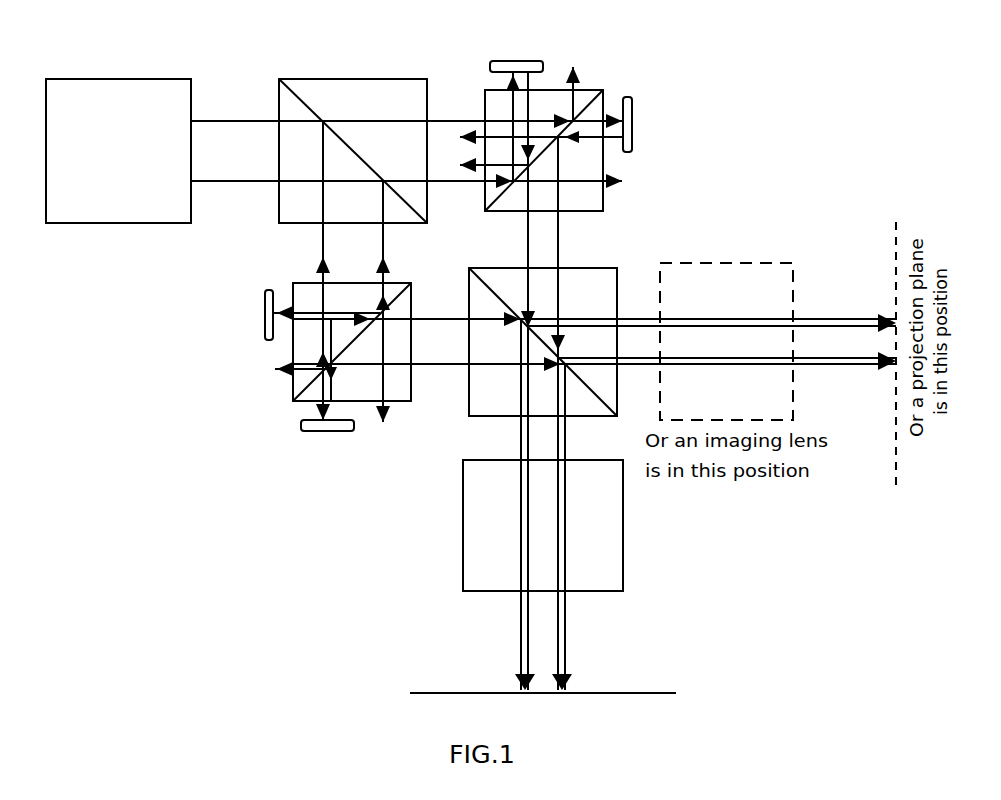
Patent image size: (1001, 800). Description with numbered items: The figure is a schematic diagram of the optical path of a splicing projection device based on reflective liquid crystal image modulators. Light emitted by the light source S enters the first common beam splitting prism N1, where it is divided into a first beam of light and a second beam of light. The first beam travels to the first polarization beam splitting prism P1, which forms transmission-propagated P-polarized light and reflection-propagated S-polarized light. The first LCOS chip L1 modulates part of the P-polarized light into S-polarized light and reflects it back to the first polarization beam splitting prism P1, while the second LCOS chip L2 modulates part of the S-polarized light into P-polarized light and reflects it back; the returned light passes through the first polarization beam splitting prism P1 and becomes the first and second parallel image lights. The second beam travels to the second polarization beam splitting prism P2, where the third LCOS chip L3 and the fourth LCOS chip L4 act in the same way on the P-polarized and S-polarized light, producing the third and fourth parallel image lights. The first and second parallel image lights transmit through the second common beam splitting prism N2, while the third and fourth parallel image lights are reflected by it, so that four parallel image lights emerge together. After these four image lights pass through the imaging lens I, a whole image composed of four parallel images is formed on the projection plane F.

The light source S is at (93, 78).
The first common beam splitting prism N1 is at (347, 78).
The first LCOS chip L1 is at (517, 62).
The first polarization beam splitting prism P1 is at (579, 92).
The second LCOS chip L2 is at (633, 98).
The second common beam splitting prism N2 is at (593, 270).
The second polarization beam splitting prism P2 is at (396, 289).
The third LCOS chip L3 is at (317, 432).
The fourth LCOS chip L4 is at (265, 292).
The imaging lens I is at (463, 460).
The projection plane F is at (630, 693).